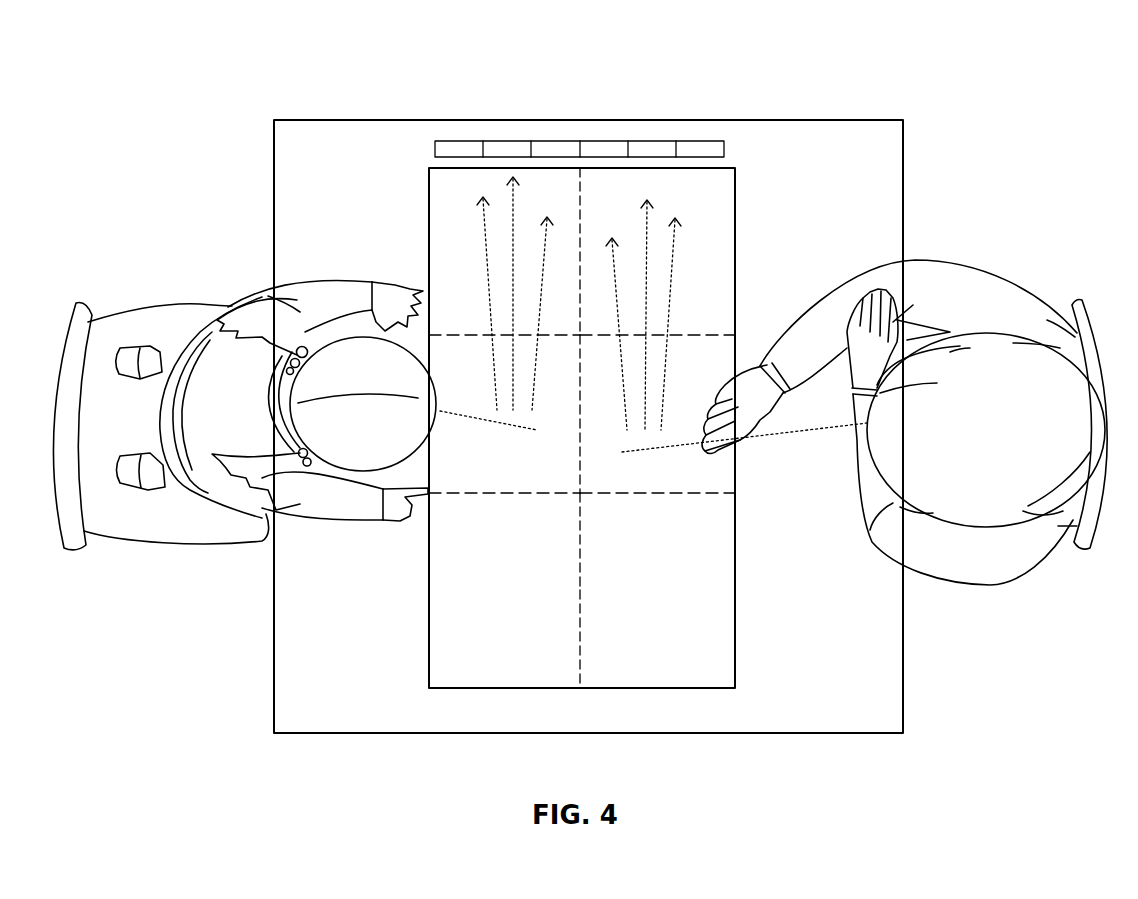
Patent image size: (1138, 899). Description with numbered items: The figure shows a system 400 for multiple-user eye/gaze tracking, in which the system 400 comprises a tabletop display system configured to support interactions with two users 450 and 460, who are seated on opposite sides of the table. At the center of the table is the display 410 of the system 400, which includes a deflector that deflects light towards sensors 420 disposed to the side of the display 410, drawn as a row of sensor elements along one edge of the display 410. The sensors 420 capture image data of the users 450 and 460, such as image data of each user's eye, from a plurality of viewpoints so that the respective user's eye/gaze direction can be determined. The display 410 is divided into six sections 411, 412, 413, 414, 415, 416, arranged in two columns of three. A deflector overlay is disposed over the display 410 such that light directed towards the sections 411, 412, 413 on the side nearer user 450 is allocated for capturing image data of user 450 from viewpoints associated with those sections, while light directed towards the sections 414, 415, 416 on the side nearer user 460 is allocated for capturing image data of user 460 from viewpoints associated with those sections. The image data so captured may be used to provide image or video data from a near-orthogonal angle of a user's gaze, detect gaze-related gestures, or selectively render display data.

The system 400 is at (338, 164).
The display 410 is at (736, 169).
The section 411 is at (657, 304).
The section 412 is at (723, 419).
The section 413 is at (653, 597).
The section 414 is at (504, 541).
The section 415 is at (510, 414).
The section 416 is at (504, 289).
The sensors 420 is at (466, 140).
The user 450 is at (951, 260).
The user 460 is at (213, 293).